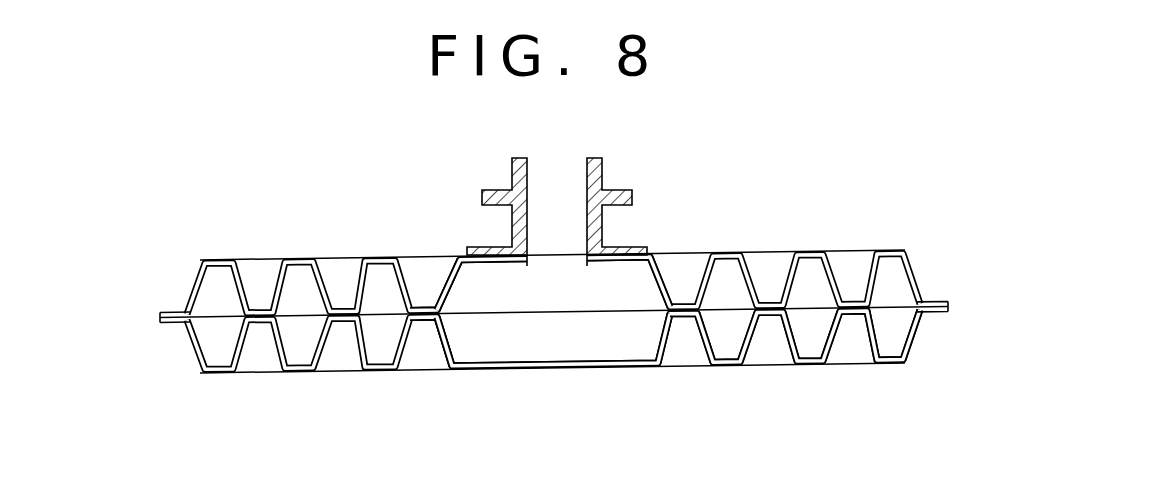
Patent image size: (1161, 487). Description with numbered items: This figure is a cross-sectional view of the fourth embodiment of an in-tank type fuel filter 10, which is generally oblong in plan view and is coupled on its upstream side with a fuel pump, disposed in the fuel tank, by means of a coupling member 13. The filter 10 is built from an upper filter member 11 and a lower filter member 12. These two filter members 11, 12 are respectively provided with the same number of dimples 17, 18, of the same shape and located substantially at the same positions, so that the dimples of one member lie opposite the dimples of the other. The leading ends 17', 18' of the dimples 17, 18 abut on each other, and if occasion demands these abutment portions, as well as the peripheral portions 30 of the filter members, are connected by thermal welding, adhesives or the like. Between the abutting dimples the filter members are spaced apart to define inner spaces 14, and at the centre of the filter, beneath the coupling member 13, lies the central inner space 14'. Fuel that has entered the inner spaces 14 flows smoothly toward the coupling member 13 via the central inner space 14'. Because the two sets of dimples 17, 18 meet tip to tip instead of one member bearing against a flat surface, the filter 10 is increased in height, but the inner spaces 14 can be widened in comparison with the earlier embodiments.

The fuel filter 10 is at (852, 231).
The upper filter member 11 is at (208, 259).
The lower filter member 12 is at (205, 373).
The coupling member 13 is at (604, 172).
The inner spaces 14 is at (795, 387).
The central inner space 14' is at (553, 355).
The dimples 17 is at (406, 242).
The leading ends 17' is at (440, 219).
The dimples 18 is at (395, 385).
The leading ends 18' is at (438, 395).
The peripheral portions 30 is at (178, 308).